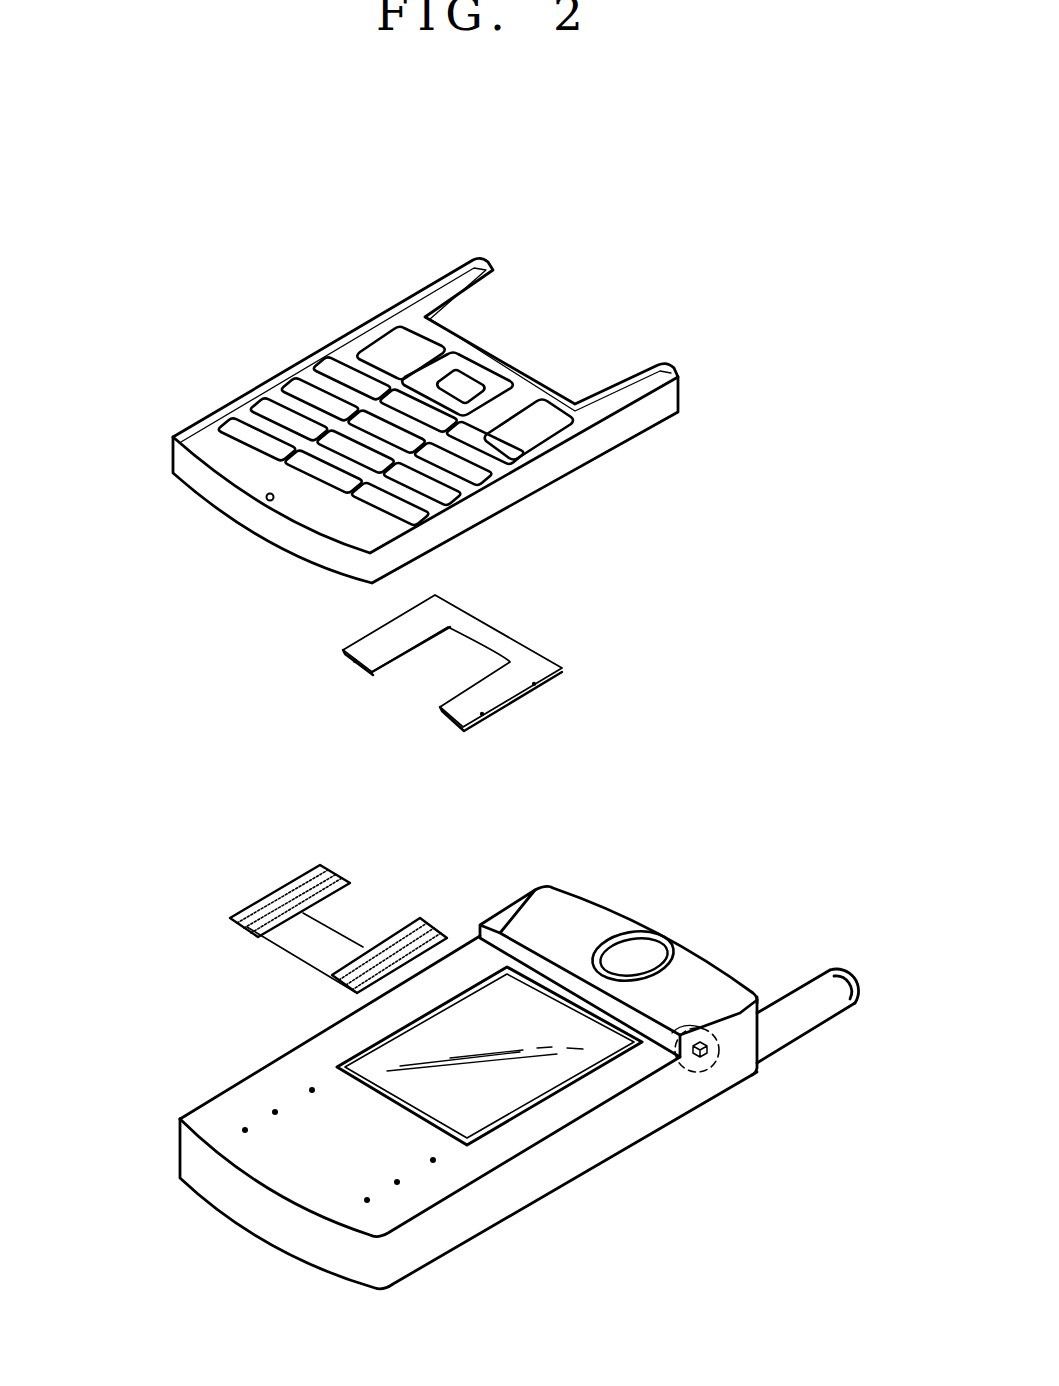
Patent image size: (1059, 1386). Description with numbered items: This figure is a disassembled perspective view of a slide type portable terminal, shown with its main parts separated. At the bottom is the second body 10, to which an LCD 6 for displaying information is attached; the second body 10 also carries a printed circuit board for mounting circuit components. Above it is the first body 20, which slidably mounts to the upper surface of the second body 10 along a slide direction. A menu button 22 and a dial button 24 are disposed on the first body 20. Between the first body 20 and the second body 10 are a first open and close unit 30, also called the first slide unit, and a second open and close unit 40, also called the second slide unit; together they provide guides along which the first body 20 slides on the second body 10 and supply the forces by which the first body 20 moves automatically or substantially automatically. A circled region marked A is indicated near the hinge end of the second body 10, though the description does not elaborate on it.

The LCD 6 is at (513, 1083).
The second body 10 is at (270, 1217).
The first body 20 is at (404, 408).
The menu button 22 is at (375, 353).
The dial button 24 is at (277, 412).
The first open and close unit 30 is at (302, 945).
The second open and close unit 40 is at (520, 662).
The hinge portion A is at (713, 1067).